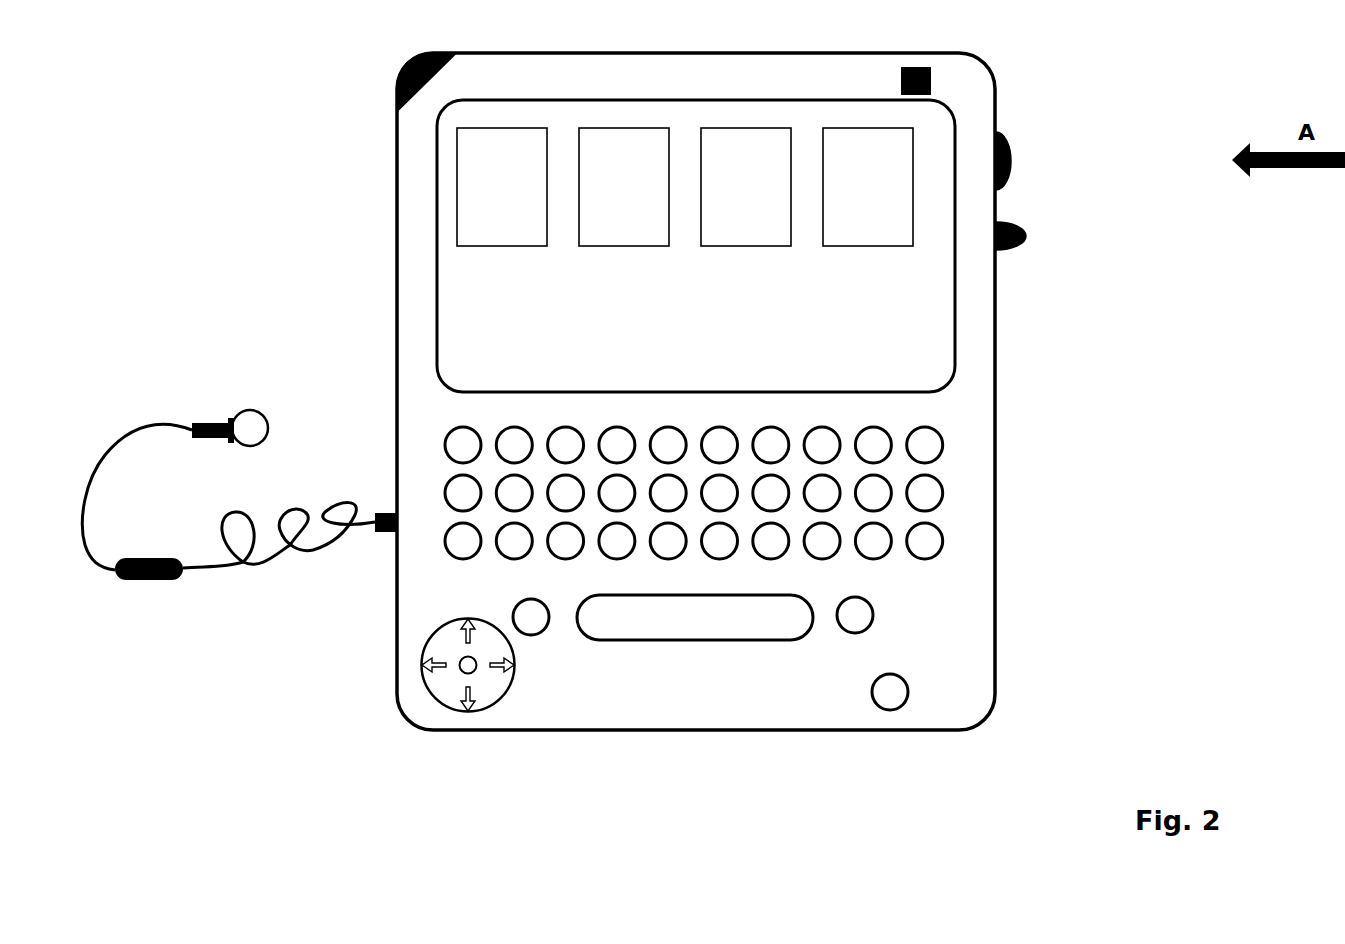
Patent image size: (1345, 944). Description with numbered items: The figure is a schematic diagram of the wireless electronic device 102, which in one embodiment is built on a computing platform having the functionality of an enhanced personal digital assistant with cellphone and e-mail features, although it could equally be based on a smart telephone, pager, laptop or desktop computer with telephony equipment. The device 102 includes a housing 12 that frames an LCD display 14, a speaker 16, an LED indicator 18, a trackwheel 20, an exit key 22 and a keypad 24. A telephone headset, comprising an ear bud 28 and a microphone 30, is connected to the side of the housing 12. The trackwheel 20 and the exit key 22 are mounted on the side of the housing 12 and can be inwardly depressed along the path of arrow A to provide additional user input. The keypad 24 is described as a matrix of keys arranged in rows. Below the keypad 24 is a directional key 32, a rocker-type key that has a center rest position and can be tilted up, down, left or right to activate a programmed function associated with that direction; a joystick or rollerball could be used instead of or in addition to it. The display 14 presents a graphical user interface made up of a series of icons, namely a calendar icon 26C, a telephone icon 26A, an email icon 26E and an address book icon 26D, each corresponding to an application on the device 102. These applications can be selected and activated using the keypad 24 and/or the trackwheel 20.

The housing 12 is at (825, 703).
The LCD display 14 is at (930, 320).
The speaker 16 is at (382, 73).
The LED indicator 18 is at (945, 77).
The trackwheel 20 is at (1030, 158).
The exit key 22 is at (1035, 237).
The keypad 24 is at (943, 490).
The telephone icon 26A is at (624, 212).
The calendar icon 26C is at (502, 212).
The address book icon 26D is at (868, 212).
The email icon 26E is at (746, 212).
The ear bud 28 is at (268, 405).
The microphone 30 is at (148, 543).
The directional key 32 is at (428, 695).
The electronic device 102 is at (578, 735).